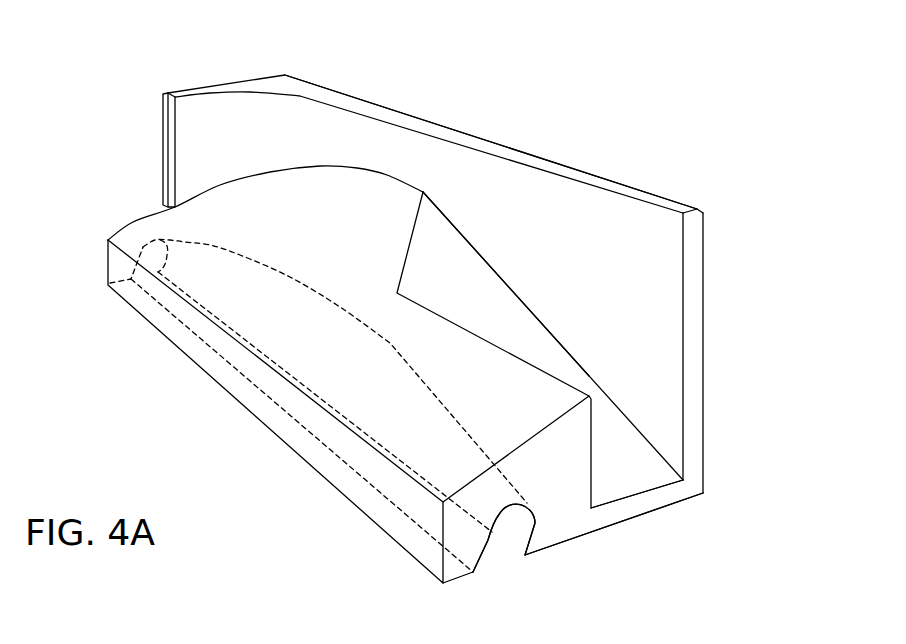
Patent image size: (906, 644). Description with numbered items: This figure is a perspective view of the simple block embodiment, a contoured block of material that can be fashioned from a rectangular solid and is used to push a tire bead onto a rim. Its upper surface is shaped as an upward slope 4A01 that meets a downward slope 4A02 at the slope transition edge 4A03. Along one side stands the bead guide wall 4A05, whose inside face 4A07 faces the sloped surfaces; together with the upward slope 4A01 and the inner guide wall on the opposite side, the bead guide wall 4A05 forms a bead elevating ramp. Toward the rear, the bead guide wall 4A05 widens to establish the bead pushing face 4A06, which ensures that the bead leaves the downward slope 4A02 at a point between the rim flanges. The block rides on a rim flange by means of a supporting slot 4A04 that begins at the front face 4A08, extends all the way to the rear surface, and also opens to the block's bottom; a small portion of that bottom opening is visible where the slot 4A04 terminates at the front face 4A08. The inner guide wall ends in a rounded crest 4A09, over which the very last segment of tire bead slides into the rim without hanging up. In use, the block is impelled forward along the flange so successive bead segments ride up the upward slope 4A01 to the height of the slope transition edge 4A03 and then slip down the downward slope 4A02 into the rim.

The upward slope 4A01 is at (612, 462).
The downward slope 4A02 is at (312, 240).
The slope transition edge 4A03 is at (408, 250).
The supporting slot 4A04 is at (515, 525).
The bead guide wall 4A05 is at (665, 202).
The bead pushing face 4A06 is at (218, 118).
The bead guide wall inside face 4A07 is at (553, 230).
The front face 4A08 is at (670, 497).
The inner guide wall crest 4A09 is at (500, 348).